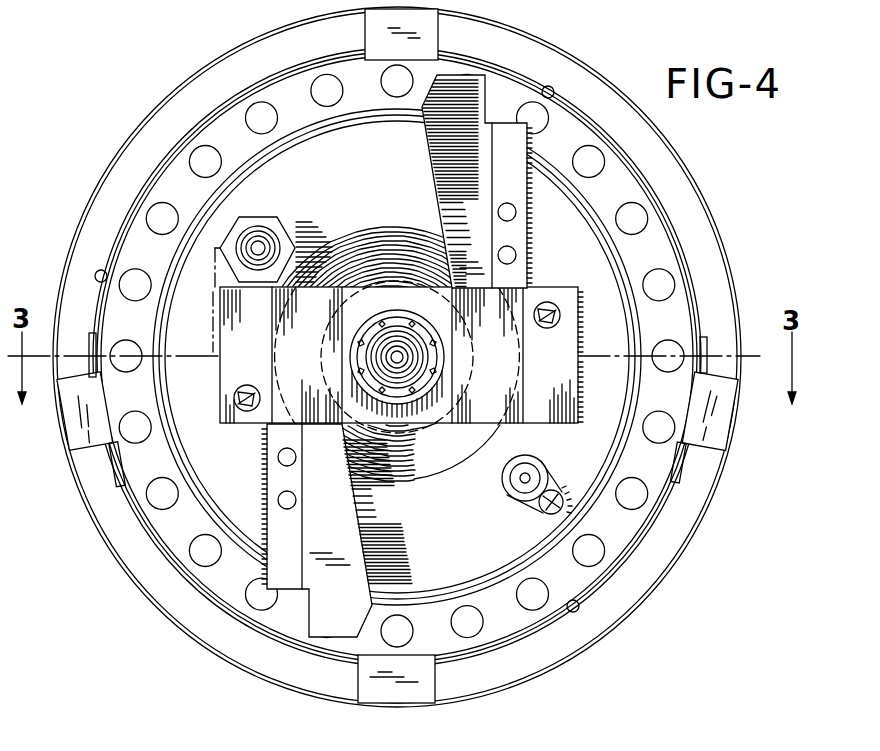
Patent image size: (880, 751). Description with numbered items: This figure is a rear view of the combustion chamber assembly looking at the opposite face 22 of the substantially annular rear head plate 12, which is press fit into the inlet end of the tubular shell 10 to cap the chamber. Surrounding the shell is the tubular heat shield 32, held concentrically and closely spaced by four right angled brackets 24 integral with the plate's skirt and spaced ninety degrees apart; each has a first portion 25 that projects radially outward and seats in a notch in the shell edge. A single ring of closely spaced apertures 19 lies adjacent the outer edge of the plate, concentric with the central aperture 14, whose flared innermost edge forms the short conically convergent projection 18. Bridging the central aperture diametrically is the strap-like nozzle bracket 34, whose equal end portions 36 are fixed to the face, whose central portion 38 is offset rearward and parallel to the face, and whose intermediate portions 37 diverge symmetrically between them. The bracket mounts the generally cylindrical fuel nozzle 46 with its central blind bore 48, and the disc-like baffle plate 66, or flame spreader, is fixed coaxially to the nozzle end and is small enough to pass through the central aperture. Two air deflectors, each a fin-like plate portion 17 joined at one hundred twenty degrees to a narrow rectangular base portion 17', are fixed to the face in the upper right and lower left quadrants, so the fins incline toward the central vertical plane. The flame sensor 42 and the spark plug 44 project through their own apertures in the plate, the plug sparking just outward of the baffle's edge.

The tubular shell 10 is at (578, 110).
The rear head plate 12 is at (337, 203).
The central aperture 14 is at (428, 432).
The fin-like plate portion 17 is at (397, 356).
The base portion 17' is at (405, 356).
The conically convergent projection 18 is at (406, 268).
The apertures 19 is at (642, 500).
The opposite face 22 is at (477, 548).
The right angled brackets 24 is at (88, 456).
The first portion 25 is at (86, 380).
The tubular heat shield 32 is at (177, 88).
The nozzle bracket 34 is at (385, 279).
The end portions 36 is at (253, 371).
The diverging portions 37 is at (306, 391).
The central portion 38 is at (376, 428).
The flame sensor 42 is at (521, 482).
The spark plug 44 is at (258, 247).
The fuel nozzle 46 is at (391, 340).
The blind bore 48 is at (399, 355).
The baffle plate 66 is at (421, 437).